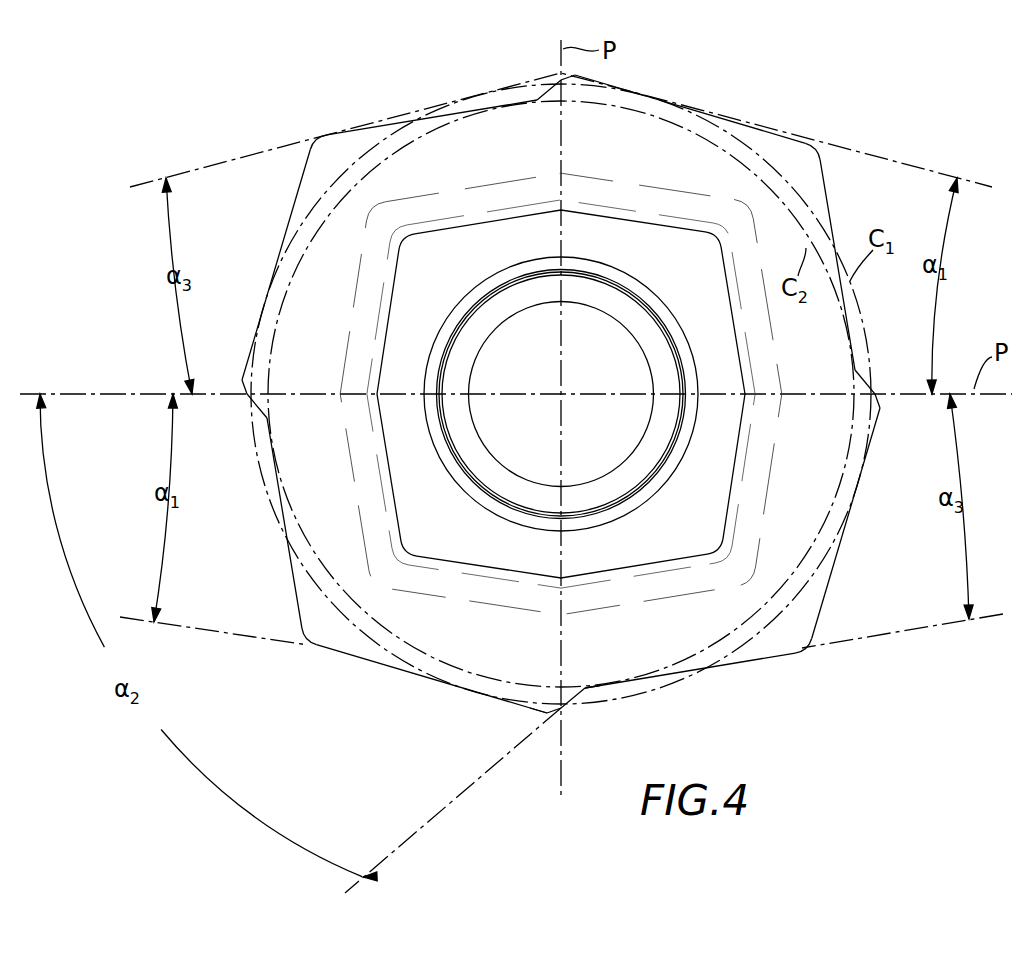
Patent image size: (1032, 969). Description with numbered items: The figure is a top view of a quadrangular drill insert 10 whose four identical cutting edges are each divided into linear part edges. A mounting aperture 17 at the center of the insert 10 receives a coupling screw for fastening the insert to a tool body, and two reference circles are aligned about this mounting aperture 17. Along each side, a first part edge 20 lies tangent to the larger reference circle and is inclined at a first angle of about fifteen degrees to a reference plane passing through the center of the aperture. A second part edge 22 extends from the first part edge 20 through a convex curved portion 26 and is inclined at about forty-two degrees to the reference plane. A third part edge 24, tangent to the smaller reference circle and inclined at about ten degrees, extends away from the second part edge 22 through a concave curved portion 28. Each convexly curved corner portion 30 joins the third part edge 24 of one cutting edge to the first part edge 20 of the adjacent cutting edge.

The insert 10 is at (905, 112).
The mounting aperture 17 is at (640, 446).
The first part edge 20 is at (294, 200).
The second part edge 22 is at (577, 704).
The third part edge 24 is at (393, 123).
The convex curved portion 26 is at (545, 713).
The concave curved portion 28 is at (587, 690).
The convexly curved corner portion 30 is at (317, 136).